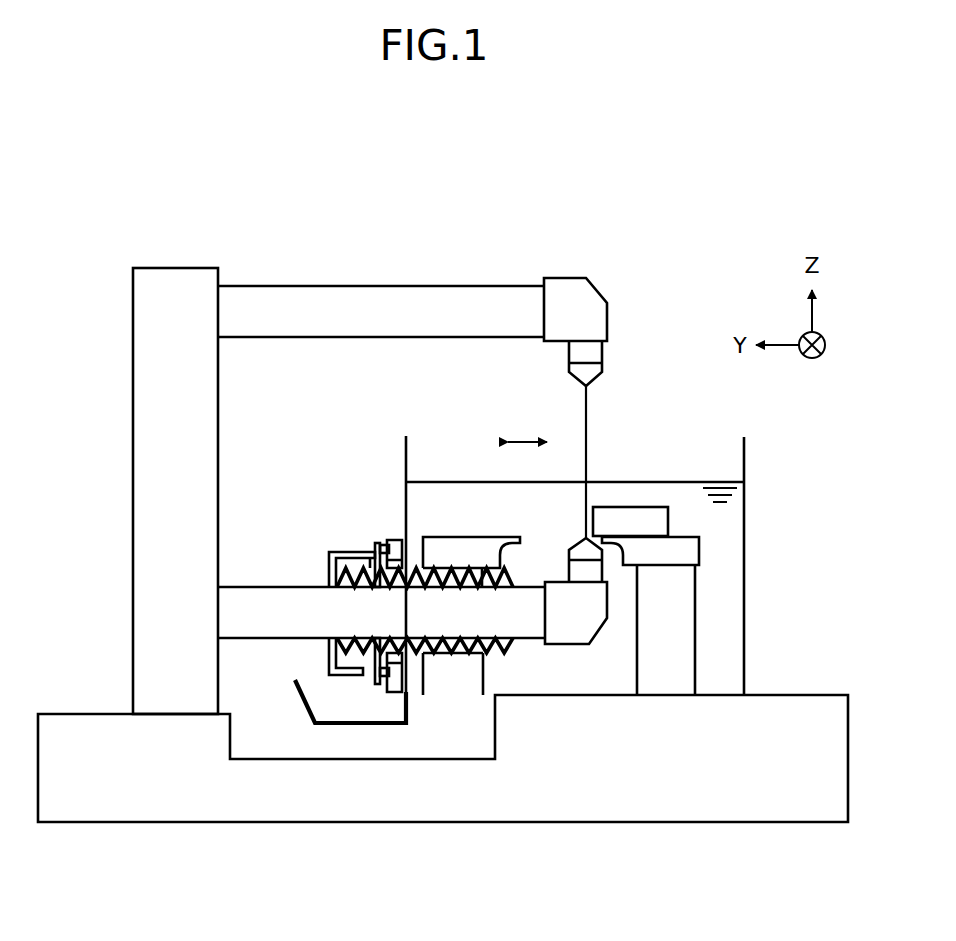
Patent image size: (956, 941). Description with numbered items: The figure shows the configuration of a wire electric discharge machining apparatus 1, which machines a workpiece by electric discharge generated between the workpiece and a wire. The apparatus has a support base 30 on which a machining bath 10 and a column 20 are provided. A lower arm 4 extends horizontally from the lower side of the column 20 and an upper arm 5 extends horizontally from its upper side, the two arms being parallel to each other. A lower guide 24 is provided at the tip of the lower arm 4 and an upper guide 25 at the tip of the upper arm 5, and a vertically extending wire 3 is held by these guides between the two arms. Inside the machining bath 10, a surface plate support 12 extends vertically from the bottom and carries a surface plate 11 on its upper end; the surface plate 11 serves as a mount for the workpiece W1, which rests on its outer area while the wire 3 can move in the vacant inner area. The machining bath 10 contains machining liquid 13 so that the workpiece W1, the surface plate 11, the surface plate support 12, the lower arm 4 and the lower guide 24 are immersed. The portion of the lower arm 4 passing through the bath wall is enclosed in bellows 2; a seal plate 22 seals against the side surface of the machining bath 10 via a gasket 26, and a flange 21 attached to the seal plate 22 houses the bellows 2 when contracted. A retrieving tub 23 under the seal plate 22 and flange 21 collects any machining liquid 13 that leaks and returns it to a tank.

The wire electric discharge machining apparatus 1 is at (642, 180).
The bellows 2 is at (503, 642).
The wire 3 is at (587, 427).
The lower arm 4 is at (529, 642).
The upper arm 5 is at (470, 286).
The machining bath 10 is at (744, 456).
The surface plate 11 is at (699, 548).
The surface plate support 12 is at (695, 628).
The machining liquid 13 is at (729, 588).
The column 20 is at (186, 268).
The flange 21 is at (345, 552).
The seal plate 22 is at (378, 686).
The retrieving tub 23 is at (327, 725).
The lower guide 24 is at (601, 630).
The upper guide 25 is at (562, 278).
The gasket 26 is at (390, 540).
The support base 30 is at (818, 695).
The workpiece W1 is at (668, 517).